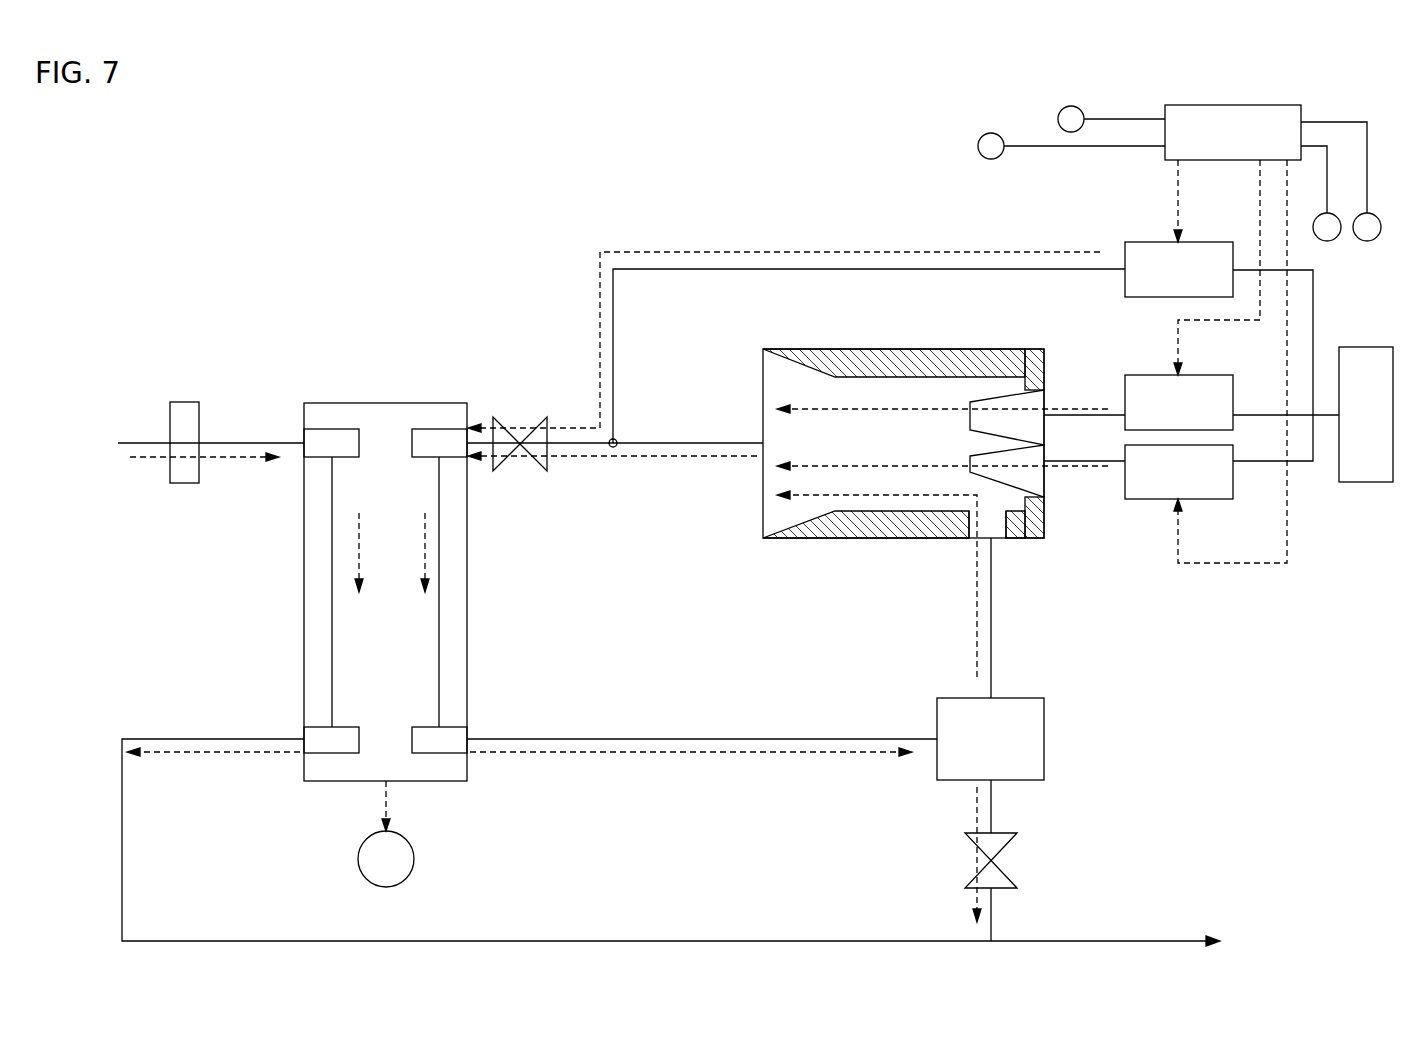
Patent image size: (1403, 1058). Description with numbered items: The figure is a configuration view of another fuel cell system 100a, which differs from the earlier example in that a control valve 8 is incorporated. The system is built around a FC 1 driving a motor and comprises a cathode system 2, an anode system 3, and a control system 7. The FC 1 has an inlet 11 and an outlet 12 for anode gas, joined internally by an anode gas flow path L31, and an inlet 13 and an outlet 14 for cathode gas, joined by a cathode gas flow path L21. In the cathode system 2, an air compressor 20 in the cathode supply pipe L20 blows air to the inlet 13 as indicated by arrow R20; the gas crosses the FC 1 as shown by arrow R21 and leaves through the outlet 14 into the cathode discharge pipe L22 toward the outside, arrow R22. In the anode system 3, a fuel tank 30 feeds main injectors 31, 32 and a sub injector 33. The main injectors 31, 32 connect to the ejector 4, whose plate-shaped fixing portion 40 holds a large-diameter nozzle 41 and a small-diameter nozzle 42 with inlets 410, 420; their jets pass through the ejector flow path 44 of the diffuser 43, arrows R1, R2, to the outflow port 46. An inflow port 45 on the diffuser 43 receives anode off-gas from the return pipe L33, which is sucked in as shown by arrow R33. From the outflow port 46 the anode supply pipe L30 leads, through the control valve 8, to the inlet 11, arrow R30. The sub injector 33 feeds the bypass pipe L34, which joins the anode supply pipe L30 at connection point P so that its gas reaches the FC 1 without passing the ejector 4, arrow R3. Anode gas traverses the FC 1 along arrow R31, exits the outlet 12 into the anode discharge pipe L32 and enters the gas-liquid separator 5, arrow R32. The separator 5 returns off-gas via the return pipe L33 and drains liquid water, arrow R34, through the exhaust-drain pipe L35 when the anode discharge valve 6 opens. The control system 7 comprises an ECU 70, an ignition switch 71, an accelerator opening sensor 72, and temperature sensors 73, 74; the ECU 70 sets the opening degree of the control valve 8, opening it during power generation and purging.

The fuel cell system 100a is at (318, 226).
The cathode system 2 is at (268, 352).
The FC 1 is at (440, 403).
The inlet 11 is at (441, 430).
The outlet 12 is at (434, 757).
The inlet 13 is at (336, 430).
The outlet 14 is at (336, 757).
The air compressor 20 is at (185, 402).
The control valve 8 is at (548, 422).
The connection point P is at (618, 438).
The anode system 3 is at (968, 230).
The ejector 4 is at (1096, 353).
The fixing portion 40 is at (1031, 349).
The large-diameter nozzle 41 is at (993, 400).
The small-diameter nozzle 42 is at (1023, 500).
The diffuser 43 is at (865, 349).
The ejector flow path 44 is at (887, 455).
The inflow port 45 is at (1000, 530).
The outflow port 46 is at (763, 398).
The inlet 410 is at (1047, 403).
The inlet 420 is at (1047, 457).
The fuel tank 30 is at (1368, 347).
The main injector 31 is at (1208, 375).
The main injector 32 is at (1233, 452).
The sub injector 33 is at (1208, 242).
The gas-liquid separator 5 is at (1020, 698).
The anode discharge valve 6 is at (1005, 833).
The control system 7 is at (1322, 95).
The ECU 70 is at (1272, 105).
The ignition switch 71 is at (1330, 213).
The accelerator opening sensor 72 is at (1370, 213).
The temperature sensor 73 is at (1080, 107).
The temperature sensor 74 is at (1001, 134).
The cathode supply pipe L20 is at (250, 427).
The arrow R20 is at (204, 469).
The cathode gas flow path L21 is at (332, 562).
The arrow R21 is at (364, 537).
The cathode discharge pipe L22 is at (224, 739).
The arrow R22 is at (213, 767).
The anode supply pipe L30 is at (655, 443).
The arrow R30 is at (612, 470).
The anode gas flow path L31 is at (439, 562).
The arrow R31 is at (420, 537).
The anode discharge pipe L32 is at (702, 739).
The arrow R32 is at (691, 766).
The return pipe L33 is at (993, 652).
The arrow R33 is at (877, 585).
The bypass pipe L34 is at (873, 269).
The arrow R3 is at (784, 327).
The arrow R1 is at (943, 399).
The arrow R2 is at (943, 480).
The drain flow R34 is at (950, 854).
The exhaust-drain pipe L35 is at (993, 934).